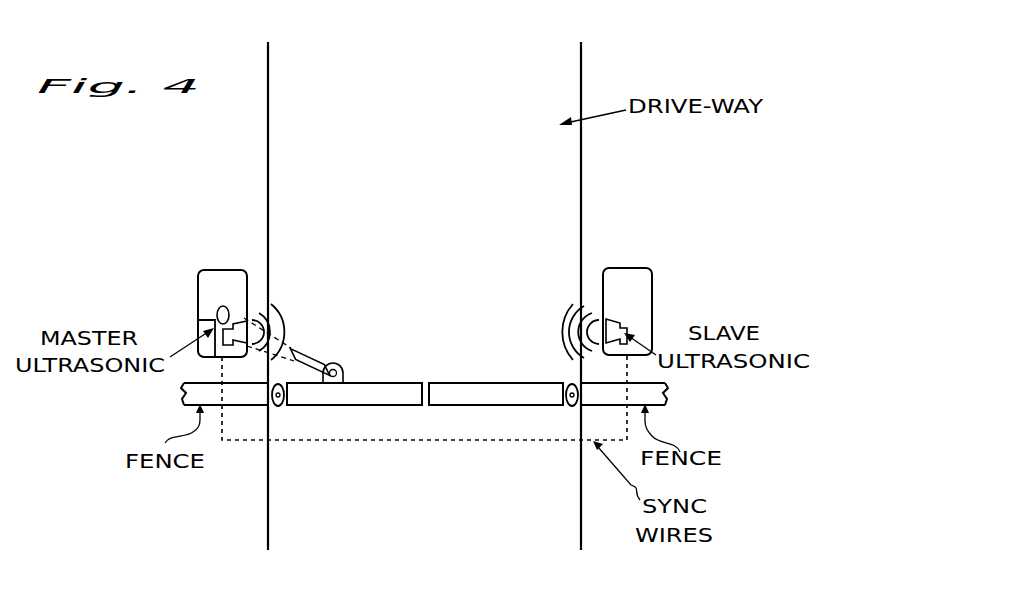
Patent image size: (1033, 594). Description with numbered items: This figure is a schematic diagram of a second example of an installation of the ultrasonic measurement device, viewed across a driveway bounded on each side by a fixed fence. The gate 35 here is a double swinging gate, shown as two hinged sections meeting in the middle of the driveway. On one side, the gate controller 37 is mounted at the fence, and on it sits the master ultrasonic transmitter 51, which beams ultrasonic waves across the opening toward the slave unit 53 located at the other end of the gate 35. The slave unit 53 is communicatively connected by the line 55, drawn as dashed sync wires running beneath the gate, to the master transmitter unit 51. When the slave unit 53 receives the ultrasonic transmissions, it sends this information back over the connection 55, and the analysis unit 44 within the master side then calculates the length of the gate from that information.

The movable gate 35 is at (380, 382).
The gate controller 37 is at (231, 270).
The analysis unit 44 is at (198, 330).
The ultrasonic transmitter 51 is at (238, 326).
The slave unit 53 is at (621, 327).
The line 55 is at (424, 442).